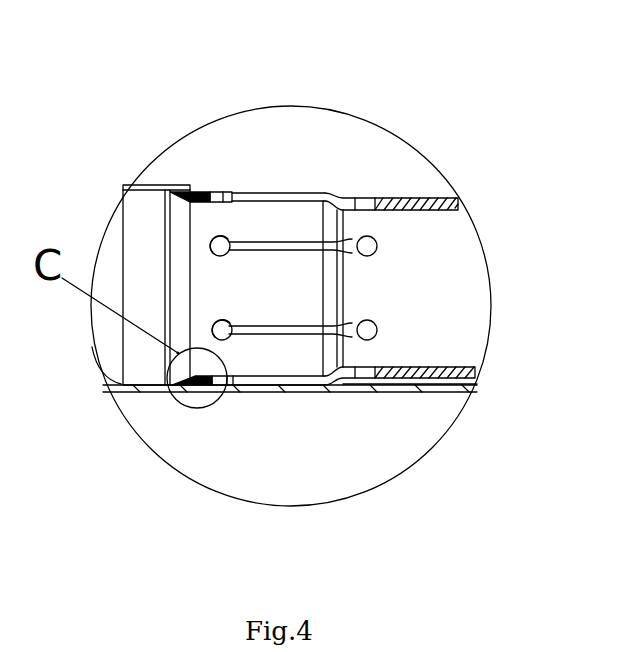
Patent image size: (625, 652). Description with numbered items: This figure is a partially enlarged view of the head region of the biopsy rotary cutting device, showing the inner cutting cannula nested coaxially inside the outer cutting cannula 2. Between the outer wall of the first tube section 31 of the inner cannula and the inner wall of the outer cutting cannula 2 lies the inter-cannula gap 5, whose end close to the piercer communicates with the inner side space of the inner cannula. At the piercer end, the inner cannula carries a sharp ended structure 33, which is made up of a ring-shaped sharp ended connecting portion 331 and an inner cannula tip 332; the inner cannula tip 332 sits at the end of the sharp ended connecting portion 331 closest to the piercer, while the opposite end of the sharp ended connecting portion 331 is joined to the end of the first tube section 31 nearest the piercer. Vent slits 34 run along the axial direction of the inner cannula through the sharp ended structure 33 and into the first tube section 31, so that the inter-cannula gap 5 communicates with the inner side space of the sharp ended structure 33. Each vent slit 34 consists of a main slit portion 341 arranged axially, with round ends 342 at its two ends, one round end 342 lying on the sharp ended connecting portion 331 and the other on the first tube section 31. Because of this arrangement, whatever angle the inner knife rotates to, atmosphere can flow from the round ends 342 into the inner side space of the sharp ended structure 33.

The outer cutting cannula 2 is at (437, 386).
The inter-cannula gap 5 is at (387, 381).
The first tube section 31 is at (451, 378).
The sharp ended structure 33 is at (263, 192).
The sharp ended connecting portion 331 is at (285, 377).
The inner cannula tip 332 is at (200, 381).
The vent slit 34 is at (305, 175).
The main slit portion 341 is at (290, 243).
The round end 342 is at (218, 243).